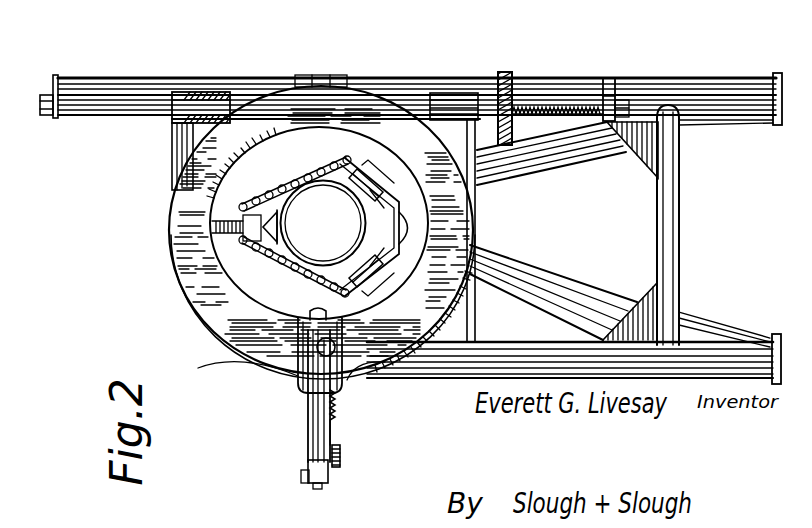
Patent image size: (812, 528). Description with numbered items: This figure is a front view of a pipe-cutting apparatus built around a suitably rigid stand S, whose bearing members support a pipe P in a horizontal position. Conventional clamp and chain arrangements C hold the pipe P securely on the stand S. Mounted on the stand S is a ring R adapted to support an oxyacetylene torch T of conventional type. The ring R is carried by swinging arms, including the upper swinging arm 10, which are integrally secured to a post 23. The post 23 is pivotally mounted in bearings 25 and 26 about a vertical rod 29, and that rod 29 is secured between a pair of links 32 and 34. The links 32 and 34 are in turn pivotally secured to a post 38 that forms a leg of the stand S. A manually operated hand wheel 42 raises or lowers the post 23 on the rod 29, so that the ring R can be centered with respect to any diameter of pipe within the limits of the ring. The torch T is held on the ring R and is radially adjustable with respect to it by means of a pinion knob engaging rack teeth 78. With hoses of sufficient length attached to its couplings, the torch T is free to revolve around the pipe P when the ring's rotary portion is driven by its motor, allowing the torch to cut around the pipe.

The upper swinging arm 10 is at (176, 165).
The post 23 is at (167, 128).
The bearing 25 is at (187, 95).
The bearing 26 is at (472, 96).
The vertical rod 29 is at (88, 107).
The link 32 is at (52, 92).
The link 34 is at (605, 80).
The post 38 is at (243, 80).
The hand wheel 42 is at (503, 72).
The rack teeth 78 is at (335, 424).
The clamp and chain arrangements C is at (275, 252).
The pipe P is at (319, 223).
The ring R is at (232, 352).
The stand S is at (583, 282).
The torch T is at (317, 417).